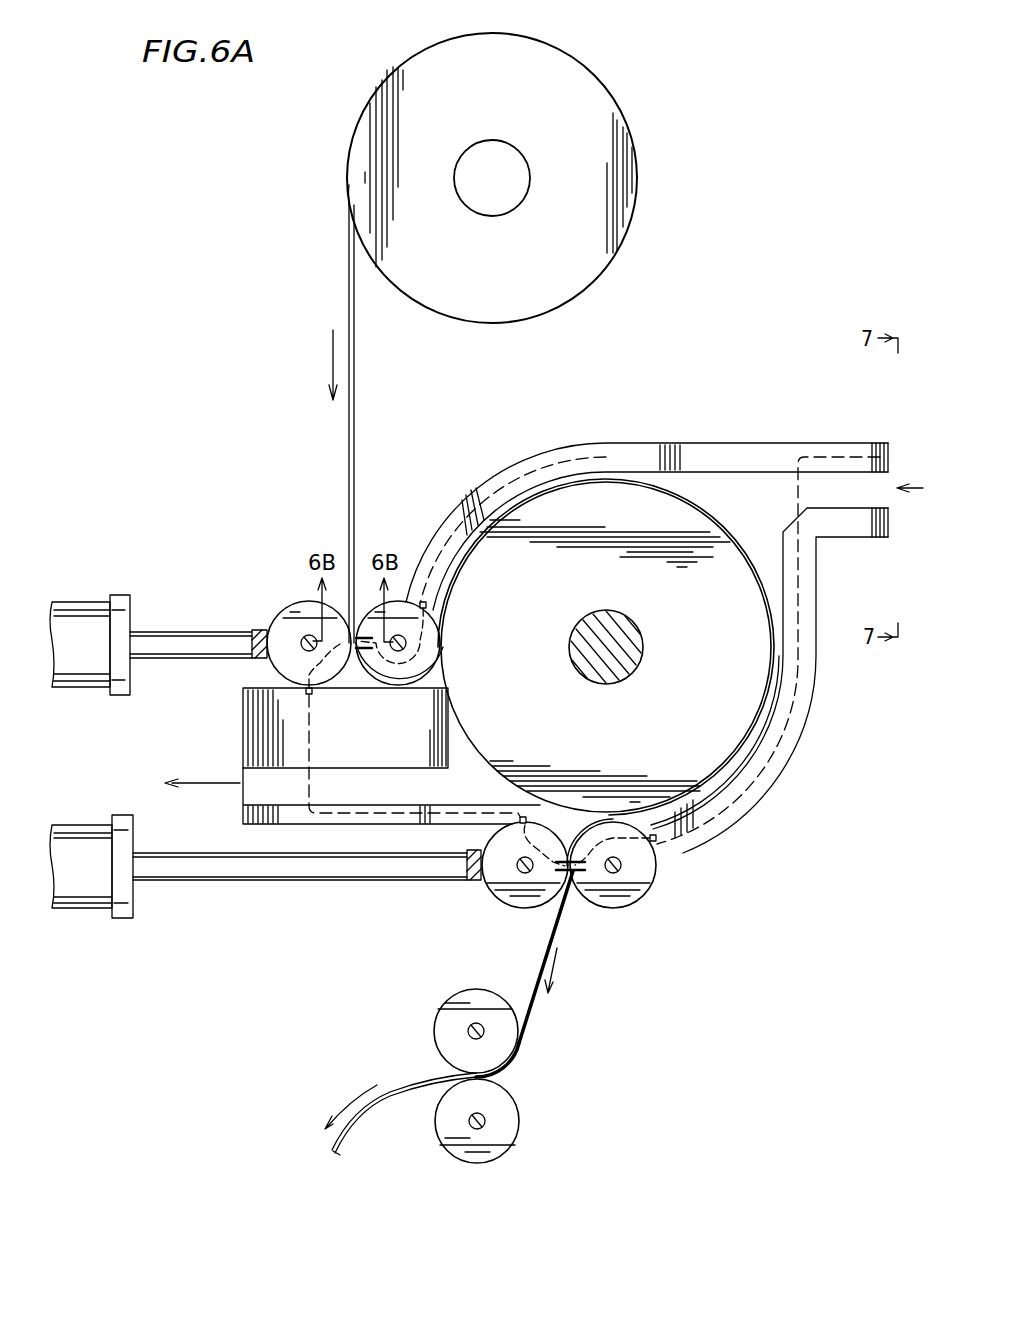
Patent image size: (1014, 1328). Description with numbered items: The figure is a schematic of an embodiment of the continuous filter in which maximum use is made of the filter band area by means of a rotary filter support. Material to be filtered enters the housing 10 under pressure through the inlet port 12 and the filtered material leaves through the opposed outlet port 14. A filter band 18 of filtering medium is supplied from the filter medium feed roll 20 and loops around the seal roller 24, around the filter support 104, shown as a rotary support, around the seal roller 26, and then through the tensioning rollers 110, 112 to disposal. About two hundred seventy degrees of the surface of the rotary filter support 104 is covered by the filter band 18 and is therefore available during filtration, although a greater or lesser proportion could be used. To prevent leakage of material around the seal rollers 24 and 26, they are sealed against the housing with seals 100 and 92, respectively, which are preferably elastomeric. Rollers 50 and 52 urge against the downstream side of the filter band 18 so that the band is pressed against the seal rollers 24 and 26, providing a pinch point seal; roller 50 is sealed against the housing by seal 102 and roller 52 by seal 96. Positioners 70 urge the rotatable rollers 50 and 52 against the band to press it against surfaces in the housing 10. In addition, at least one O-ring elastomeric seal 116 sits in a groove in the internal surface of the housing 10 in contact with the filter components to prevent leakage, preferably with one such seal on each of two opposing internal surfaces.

The housing 10 is at (598, 443).
The inlet port 12 is at (845, 487).
The outlet port 14 is at (272, 792).
The filter band 18 is at (356, 435).
The filter medium feed roll 20 is at (601, 84).
The seal roller 24 is at (393, 680).
The seal roller 26 is at (616, 908).
The roller 50 is at (285, 605).
The roller 52 is at (520, 908).
The positioner 70 is at (87, 598).
The seal 92 is at (657, 842).
The seal 96 is at (520, 823).
The seal 100 is at (425, 600).
The seal 102 is at (306, 692).
The filter support 104 is at (735, 735).
The tensioning roller 110 is at (520, 1127).
The tensioning roller 112 is at (434, 1020).
The O-ring elastomeric seal 116 is at (543, 467).